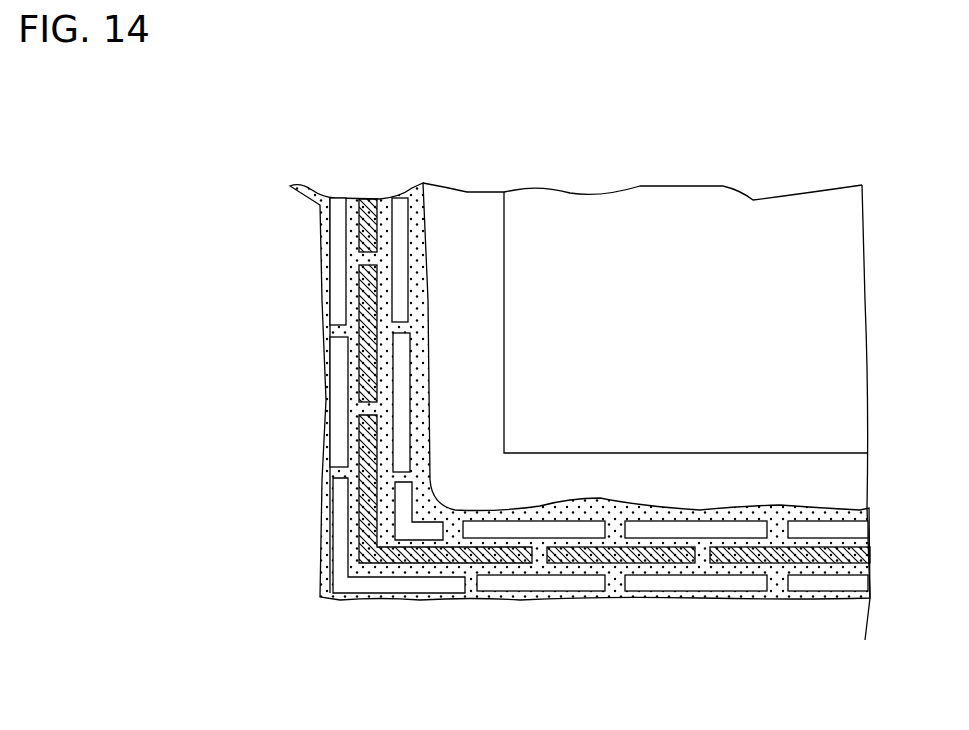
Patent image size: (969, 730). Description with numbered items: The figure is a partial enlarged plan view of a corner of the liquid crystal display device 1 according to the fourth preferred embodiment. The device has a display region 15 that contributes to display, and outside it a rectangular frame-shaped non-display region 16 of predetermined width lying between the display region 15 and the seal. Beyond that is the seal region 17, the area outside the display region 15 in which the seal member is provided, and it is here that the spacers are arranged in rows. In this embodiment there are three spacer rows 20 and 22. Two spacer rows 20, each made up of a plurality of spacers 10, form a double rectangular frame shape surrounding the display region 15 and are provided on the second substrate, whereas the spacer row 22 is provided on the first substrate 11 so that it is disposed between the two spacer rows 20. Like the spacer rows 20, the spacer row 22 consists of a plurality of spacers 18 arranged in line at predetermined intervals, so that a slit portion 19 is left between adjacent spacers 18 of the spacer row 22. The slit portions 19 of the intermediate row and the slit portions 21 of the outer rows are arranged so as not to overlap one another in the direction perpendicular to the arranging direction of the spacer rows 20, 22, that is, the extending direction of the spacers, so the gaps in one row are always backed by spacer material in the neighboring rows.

The liquid crystal display device 1 is at (239, 96).
The spacer 10 is at (403, 430).
The first substrate 11 is at (306, 186).
The display region 15 is at (674, 200).
The non-display region 16 is at (466, 203).
The seal region 17 is at (382, 198).
The spacer 18 is at (598, 555).
The slit portion 19 is at (706, 552).
The spacer row 20 is at (388, 240).
The slit portion 21 is at (775, 530).
The spacer row 22 is at (357, 512).